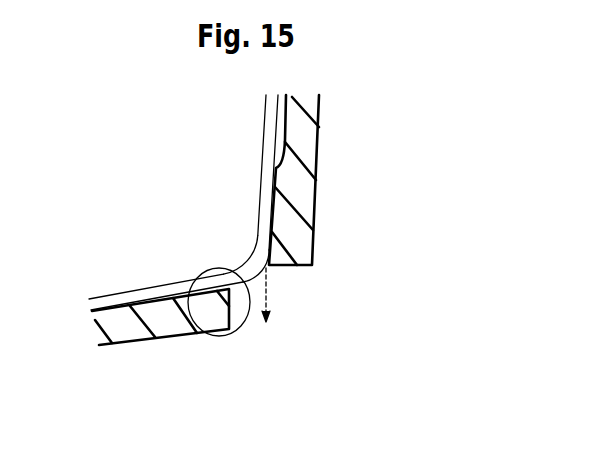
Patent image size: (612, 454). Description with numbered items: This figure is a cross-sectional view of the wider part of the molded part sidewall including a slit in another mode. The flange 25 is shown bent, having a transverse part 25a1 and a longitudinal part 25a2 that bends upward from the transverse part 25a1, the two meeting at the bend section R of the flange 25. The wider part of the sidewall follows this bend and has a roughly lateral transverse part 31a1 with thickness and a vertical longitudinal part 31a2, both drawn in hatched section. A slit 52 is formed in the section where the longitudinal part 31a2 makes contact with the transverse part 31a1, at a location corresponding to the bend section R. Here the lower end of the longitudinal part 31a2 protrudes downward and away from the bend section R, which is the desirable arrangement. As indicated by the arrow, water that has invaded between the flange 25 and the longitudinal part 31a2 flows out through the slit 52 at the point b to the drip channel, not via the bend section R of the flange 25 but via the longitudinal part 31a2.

The flange 25 is at (183, 202).
The transverse part 25a1 is at (173, 265).
The longitudinal part 25a2 is at (267, 132).
The transverse part 31a1 is at (148, 338).
The longitudinal part 31a2 is at (313, 183).
The slit 52 is at (279, 293).
The bend section R is at (246, 263).
The point b is at (219, 313).